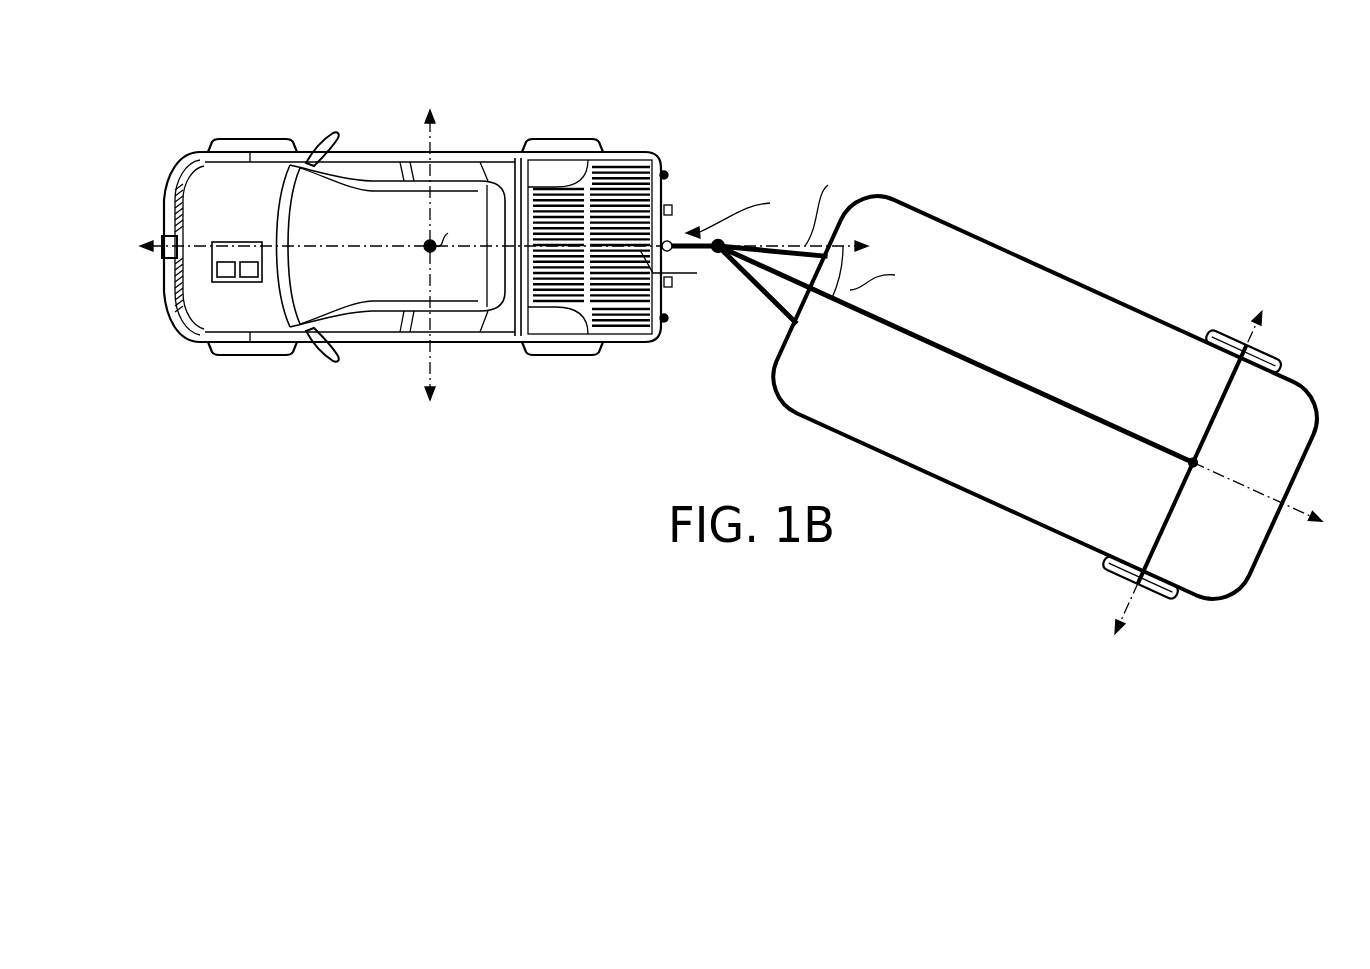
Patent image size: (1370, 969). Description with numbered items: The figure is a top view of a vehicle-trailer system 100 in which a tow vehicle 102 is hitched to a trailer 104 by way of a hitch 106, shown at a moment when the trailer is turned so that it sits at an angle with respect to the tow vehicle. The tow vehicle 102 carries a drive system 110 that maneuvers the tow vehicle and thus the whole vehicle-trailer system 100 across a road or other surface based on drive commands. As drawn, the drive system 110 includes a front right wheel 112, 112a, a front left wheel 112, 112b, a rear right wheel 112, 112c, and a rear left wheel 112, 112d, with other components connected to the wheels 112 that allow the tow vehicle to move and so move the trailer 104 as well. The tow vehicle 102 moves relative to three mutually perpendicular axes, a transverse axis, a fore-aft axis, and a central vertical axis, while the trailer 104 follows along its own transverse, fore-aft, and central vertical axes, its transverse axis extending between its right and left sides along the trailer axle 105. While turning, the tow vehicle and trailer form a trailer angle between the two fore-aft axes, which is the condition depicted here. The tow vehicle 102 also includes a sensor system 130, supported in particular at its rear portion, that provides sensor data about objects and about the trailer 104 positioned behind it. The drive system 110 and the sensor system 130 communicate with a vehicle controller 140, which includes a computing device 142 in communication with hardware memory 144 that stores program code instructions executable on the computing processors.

The vehicle-trailer system 100 is at (1341, 65).
The tow vehicle 102 is at (196, 158).
The trailer 104 is at (966, 350).
The trailer axle 105 is at (1191, 464).
The hitch 106 is at (724, 246).
The drive system 110 is at (413, 246).
The wheels 112 is at (1198, 462).
The front right wheel 112a is at (262, 141).
The front left wheel 112b is at (262, 353).
The rear right wheel 112c is at (578, 141).
The rear left wheel 112d is at (578, 353).
The sensor system 130 is at (163, 238).
The vehicle controller 140 is at (247, 260).
The computing device 142 is at (226, 280).
The hardware memory 144 is at (248, 280).